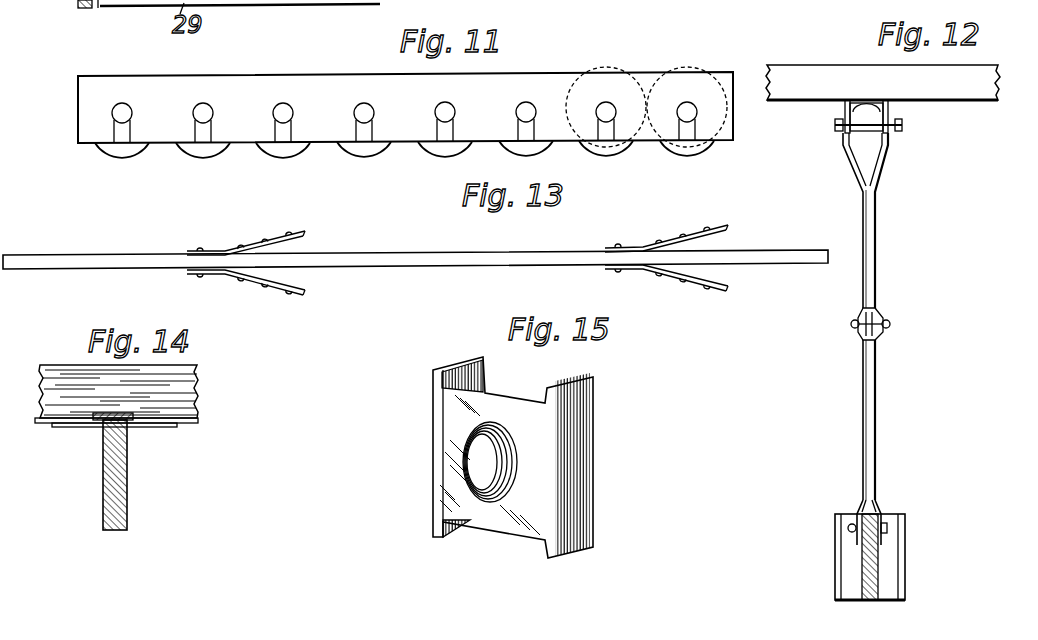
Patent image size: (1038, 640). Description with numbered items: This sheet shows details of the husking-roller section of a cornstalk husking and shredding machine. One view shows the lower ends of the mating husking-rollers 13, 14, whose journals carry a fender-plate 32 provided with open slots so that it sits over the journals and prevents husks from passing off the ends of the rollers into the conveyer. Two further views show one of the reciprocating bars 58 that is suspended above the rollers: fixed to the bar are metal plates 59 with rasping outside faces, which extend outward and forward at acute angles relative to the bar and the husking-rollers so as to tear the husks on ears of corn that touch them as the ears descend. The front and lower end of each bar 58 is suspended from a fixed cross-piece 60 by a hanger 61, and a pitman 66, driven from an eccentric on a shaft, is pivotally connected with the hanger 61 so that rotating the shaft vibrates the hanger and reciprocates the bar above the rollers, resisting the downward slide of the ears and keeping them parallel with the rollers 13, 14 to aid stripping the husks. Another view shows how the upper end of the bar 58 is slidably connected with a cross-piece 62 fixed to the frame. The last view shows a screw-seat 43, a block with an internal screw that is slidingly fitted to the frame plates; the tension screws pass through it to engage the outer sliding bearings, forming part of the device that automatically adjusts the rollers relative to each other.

In FIG. 11, the husking-roller 13 is at (213, 148).
In FIG. 11, the husking-roller 14 is at (129, 151).
In FIG. 11, the fender-plate 32 is at (405, 107).
In FIG. 15, the screw-seat 43 is at (594, 452).
In FIG. 13, the reciprocating bar 58 is at (809, 256).
In FIG. 12, the reciprocating bar 58 is at (881, 568).
In FIG. 14, the reciprocating bar 58 is at (128, 468).
In FIG. 13, the toothed plate 59 is at (618, 249).
In FIG. 12, the toothed plate 59 is at (840, 566).
In FIG. 12, the fixed cross-piece 60 is at (958, 101).
In FIG. 12, the hanger 61 is at (876, 278).
In FIG. 14, the cross-piece 62 is at (192, 376).
In FIG. 12, the pitman 66 is at (883, 337).